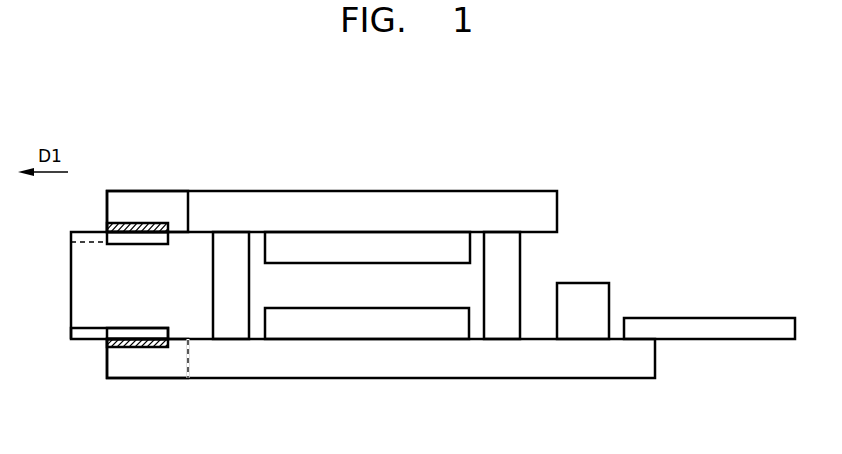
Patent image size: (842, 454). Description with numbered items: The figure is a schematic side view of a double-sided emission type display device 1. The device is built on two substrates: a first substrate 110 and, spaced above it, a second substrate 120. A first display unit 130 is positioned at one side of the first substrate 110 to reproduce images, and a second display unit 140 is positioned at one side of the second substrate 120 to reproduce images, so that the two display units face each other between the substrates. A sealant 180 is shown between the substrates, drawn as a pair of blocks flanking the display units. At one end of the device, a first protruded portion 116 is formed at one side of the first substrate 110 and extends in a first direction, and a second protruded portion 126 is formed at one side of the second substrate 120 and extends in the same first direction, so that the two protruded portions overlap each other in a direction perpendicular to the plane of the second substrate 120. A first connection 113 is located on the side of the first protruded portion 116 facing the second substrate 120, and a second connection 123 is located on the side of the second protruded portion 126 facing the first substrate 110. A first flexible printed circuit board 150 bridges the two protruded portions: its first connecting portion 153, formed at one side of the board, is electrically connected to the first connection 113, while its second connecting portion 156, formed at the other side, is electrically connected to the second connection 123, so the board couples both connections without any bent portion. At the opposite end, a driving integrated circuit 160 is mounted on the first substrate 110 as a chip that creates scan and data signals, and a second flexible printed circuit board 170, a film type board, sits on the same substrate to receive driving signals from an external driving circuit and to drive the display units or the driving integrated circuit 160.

The double-sided emission type display device 1 is at (636, 153).
The first substrate 110 is at (422, 368).
The first connection 113 is at (107, 345).
The first protruded portion 116 is at (157, 373).
The second substrate 120 is at (423, 205).
The second connection 123 is at (107, 222).
The second protruded portion 126 is at (158, 199).
The first display unit 130 is at (328, 325).
The second display unit 140 is at (329, 245).
The first flexible printed circuit board 150 is at (78, 285).
The first connecting portion 153 is at (127, 347).
The second connecting portion 156 is at (135, 222).
The driving integrated circuit 160 is at (587, 290).
The second flexible printed circuit board 170 is at (735, 322).
The sealant 180 is at (233, 243).